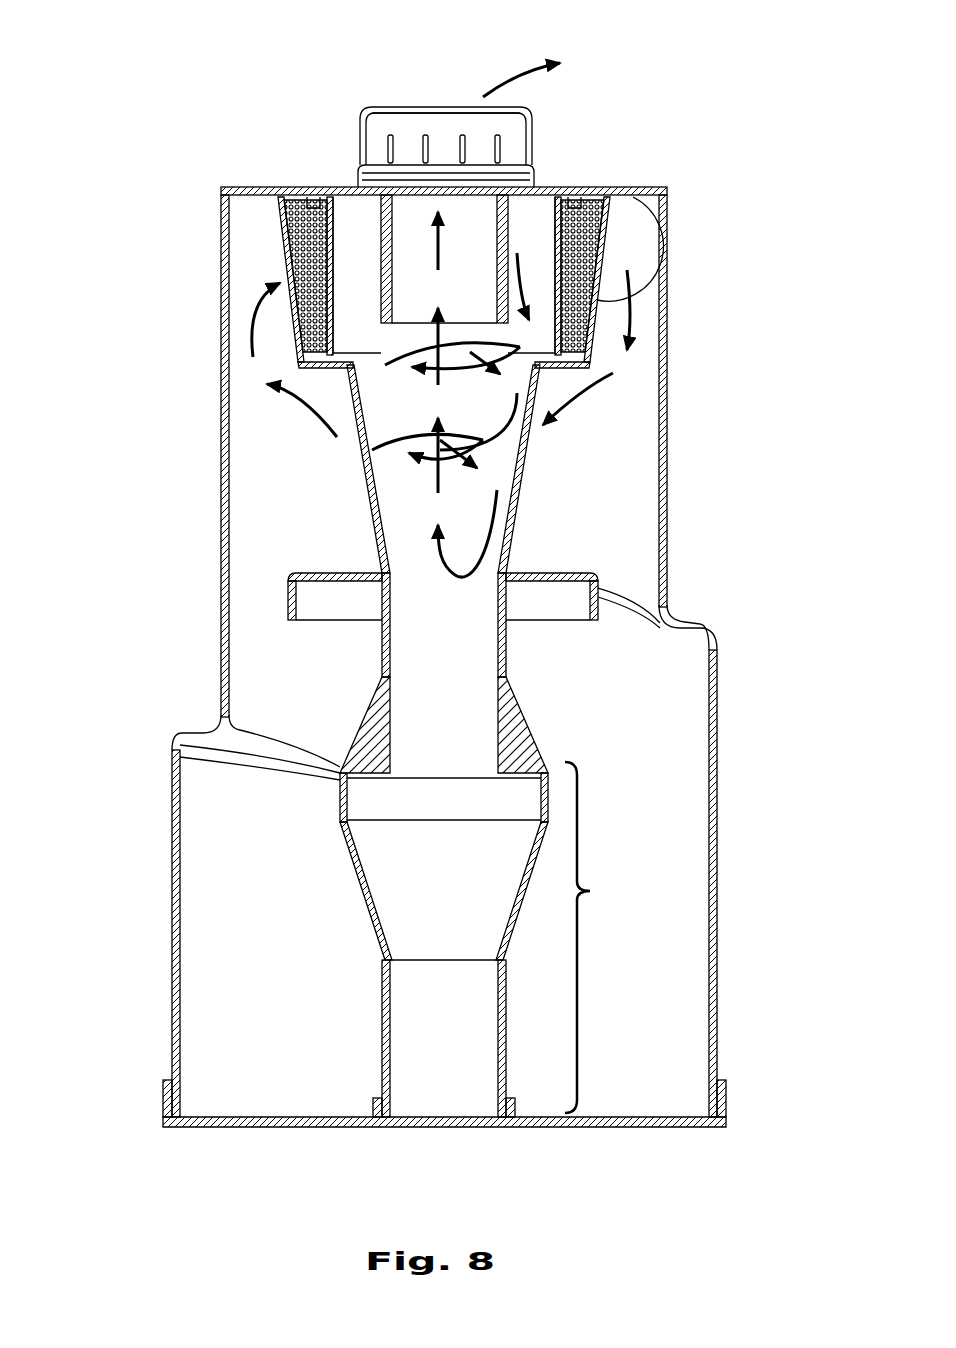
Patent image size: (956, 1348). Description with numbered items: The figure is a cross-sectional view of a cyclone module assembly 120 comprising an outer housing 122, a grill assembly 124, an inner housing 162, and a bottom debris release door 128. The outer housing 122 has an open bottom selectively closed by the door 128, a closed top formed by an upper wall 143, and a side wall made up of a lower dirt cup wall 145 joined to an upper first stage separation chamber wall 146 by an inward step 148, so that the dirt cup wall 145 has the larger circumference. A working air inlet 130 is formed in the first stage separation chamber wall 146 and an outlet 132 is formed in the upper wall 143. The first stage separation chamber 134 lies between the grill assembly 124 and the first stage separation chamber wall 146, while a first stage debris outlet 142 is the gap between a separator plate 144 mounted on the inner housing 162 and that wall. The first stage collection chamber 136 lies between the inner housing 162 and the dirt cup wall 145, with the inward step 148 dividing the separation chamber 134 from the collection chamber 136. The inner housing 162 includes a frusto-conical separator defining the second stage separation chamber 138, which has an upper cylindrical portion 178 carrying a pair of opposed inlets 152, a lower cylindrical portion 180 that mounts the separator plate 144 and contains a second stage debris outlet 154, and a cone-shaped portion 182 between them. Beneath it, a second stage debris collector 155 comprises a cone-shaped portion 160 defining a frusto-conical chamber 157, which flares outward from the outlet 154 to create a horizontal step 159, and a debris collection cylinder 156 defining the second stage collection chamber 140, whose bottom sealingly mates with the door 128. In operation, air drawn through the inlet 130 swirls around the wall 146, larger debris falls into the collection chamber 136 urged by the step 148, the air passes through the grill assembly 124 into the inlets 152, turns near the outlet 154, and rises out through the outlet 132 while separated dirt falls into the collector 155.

The cyclone module assembly 120 is at (176, 73).
The outer housing 122 is at (719, 834).
The grill assembly 124 is at (276, 208).
The bottom debris release door 128 is at (663, 1130).
The working air inlet 130 is at (623, 247).
The outlet 132 is at (405, 122).
The first stage separation chamber 134 is at (256, 277).
The first stage collection chamber 136 is at (675, 1017).
The second stage separation chamber 138 is at (415, 412).
The second stage collection chamber 140 is at (458, 1090).
The first stage debris outlet 142 is at (261, 582).
The upper wall 143 is at (633, 190).
The separator plate 144 is at (327, 573).
The dirt cup wall 145 is at (713, 935).
The first stage separation chamber wall 146 is at (224, 408).
The inward step 148 is at (216, 722).
The second stage inlets 152 is at (354, 251).
The second stage debris outlet 154 is at (455, 765).
The second stage debris collector 155 is at (598, 937).
The debris collection cylinder 156 is at (385, 1035).
The frusto-conical chamber 157 is at (457, 935).
The horizontal step 159 is at (347, 803).
The cone-shaped portion 160 is at (357, 873).
The inner housing 162 is at (542, 500).
The upper cylindrical portion 178 is at (593, 255).
The lower cylindrical portion 180 is at (506, 653).
The cone-shaped portion 182 is at (530, 443).